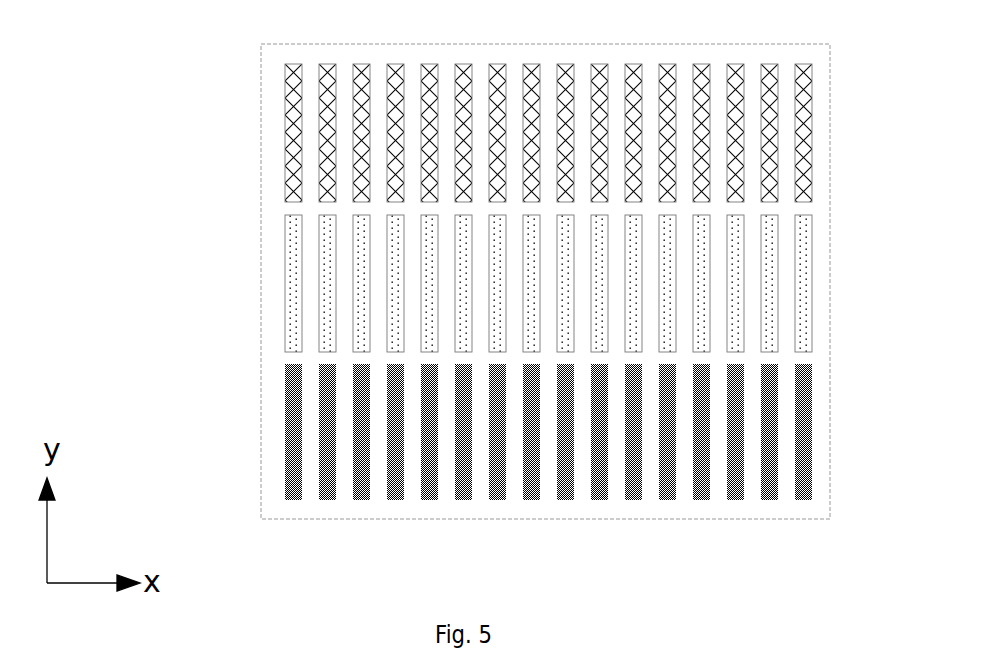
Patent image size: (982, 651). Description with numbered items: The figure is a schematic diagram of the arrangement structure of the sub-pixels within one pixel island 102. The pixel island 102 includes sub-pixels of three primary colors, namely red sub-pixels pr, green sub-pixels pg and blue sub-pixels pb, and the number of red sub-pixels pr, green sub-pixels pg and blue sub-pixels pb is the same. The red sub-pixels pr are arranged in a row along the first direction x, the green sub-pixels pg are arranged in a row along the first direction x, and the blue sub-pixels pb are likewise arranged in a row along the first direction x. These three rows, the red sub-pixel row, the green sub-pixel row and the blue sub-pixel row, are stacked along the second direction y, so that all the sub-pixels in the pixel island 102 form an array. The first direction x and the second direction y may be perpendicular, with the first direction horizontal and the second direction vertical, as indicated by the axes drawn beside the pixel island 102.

The pixel island 102 is at (262, 282).
The red sub-pixels pr is at (813, 133).
The green sub-pixels pg is at (813, 281).
The blue sub-pixels pb is at (813, 433).